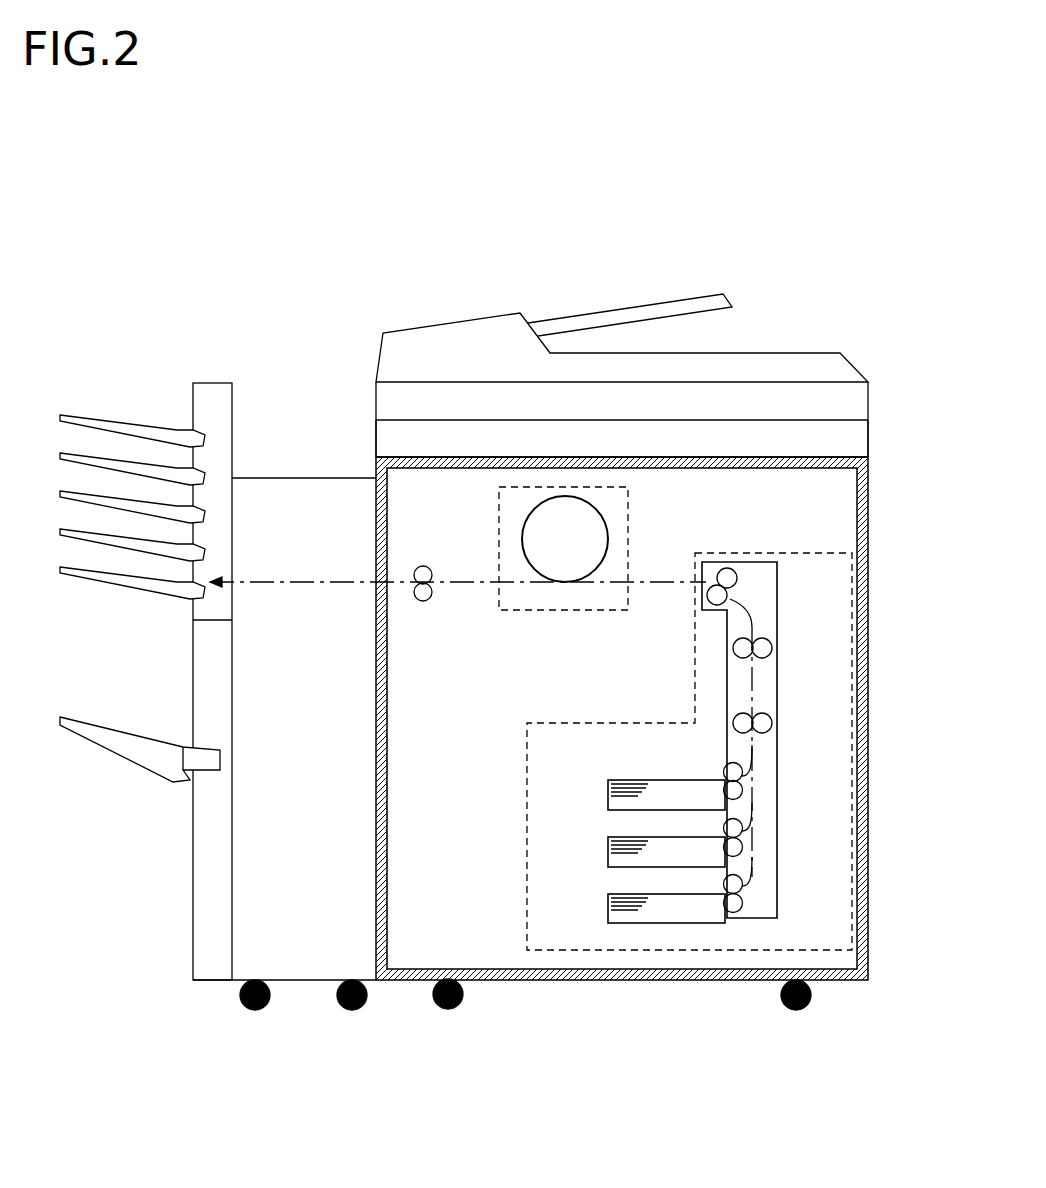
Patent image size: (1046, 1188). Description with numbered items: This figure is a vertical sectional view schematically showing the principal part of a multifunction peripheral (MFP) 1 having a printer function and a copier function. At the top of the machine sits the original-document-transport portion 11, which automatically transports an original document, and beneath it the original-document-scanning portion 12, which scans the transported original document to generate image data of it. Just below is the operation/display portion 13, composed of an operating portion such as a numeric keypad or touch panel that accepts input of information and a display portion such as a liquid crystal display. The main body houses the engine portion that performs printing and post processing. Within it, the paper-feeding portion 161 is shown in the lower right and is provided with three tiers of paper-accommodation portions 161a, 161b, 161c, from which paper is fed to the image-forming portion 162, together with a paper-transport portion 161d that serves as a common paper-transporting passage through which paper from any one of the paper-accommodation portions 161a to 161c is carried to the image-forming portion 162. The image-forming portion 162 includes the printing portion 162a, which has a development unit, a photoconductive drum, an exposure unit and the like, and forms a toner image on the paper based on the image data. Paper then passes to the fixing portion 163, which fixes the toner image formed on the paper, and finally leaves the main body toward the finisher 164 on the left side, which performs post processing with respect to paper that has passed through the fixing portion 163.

The multifunction peripheral (MFP) 1 is at (377, 248).
The original-document-transport portion 11 is at (630, 310).
The original-document-scanning portion 12 is at (868, 400).
The operation/display portion 13 is at (868, 437).
The paper-feeding portion 161 is at (769, 553).
The paper-accommodation portion 161a is at (608, 794).
The paper-accommodation portion 161b is at (608, 853).
The paper-accommodation portion 161c is at (608, 909).
The paper-transport portion 161d is at (777, 665).
The image-forming portion 162 is at (537, 611).
The printing portion 162a is at (608, 539).
The fixing portion 163 is at (440, 558).
The finisher 164 is at (210, 383).